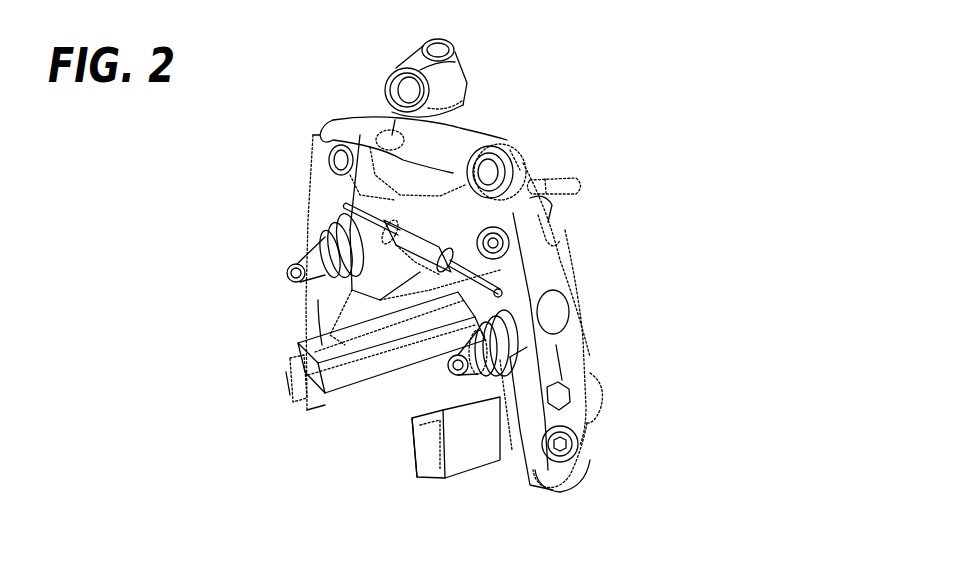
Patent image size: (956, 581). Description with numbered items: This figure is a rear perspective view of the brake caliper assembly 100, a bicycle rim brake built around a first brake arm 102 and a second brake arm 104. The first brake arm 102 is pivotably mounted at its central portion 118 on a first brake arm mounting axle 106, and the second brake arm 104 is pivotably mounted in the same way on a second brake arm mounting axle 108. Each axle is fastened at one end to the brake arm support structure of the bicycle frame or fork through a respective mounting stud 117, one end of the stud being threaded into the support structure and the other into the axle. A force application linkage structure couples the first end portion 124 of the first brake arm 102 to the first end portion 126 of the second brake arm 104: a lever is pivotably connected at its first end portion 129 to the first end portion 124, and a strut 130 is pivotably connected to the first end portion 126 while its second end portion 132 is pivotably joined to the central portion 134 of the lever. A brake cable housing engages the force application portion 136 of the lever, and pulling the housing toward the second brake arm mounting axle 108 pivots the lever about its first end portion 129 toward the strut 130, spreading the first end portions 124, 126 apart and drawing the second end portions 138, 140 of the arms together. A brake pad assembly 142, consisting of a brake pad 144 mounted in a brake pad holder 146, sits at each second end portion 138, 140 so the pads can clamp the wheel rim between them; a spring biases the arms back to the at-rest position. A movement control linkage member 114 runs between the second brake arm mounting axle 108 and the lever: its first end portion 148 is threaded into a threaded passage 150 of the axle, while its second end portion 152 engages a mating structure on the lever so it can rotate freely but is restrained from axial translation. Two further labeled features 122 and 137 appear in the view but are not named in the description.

The brake caliper assembly 100 is at (281, 69).
The first brake arm 102 is at (320, 217).
The second brake arm 104 is at (588, 355).
The first brake arm mounting axle 106 is at (373, 242).
The second brake arm mounting axle 108 is at (550, 325).
The movement control linkage member 114 is at (535, 160).
The mounting stud 117 is at (300, 268).
The central portion of the first brake arm 118 is at (587, 302).
The upper bracket 122 is at (540, 147).
The first end portion of the first brake arm 124 is at (335, 143).
The first end portion of the second brake arm 126 is at (550, 223).
The first end portion of the lever 129 is at (545, 213).
The strut 130 is at (420, 175).
The second end portion of the strut 132 is at (480, 157).
The central portion of the lever 134 is at (523, 121).
The force application portion of the lever 136 is at (460, 103).
The shaft 137 is at (407, 247).
The second end portion of the first brake arm 138 is at (307, 330).
The second end portion of the second brake arm 140 is at (563, 480).
The brake pad assembly 142 is at (313, 347).
The brake pad 144 is at (443, 377).
The brake pad holder 146 is at (287, 387).
The first end portion of the movement control linkage member 148 is at (407, 215).
The threaded passage 150 is at (383, 218).
The second end portion of the movement control linkage member 152 is at (563, 182).